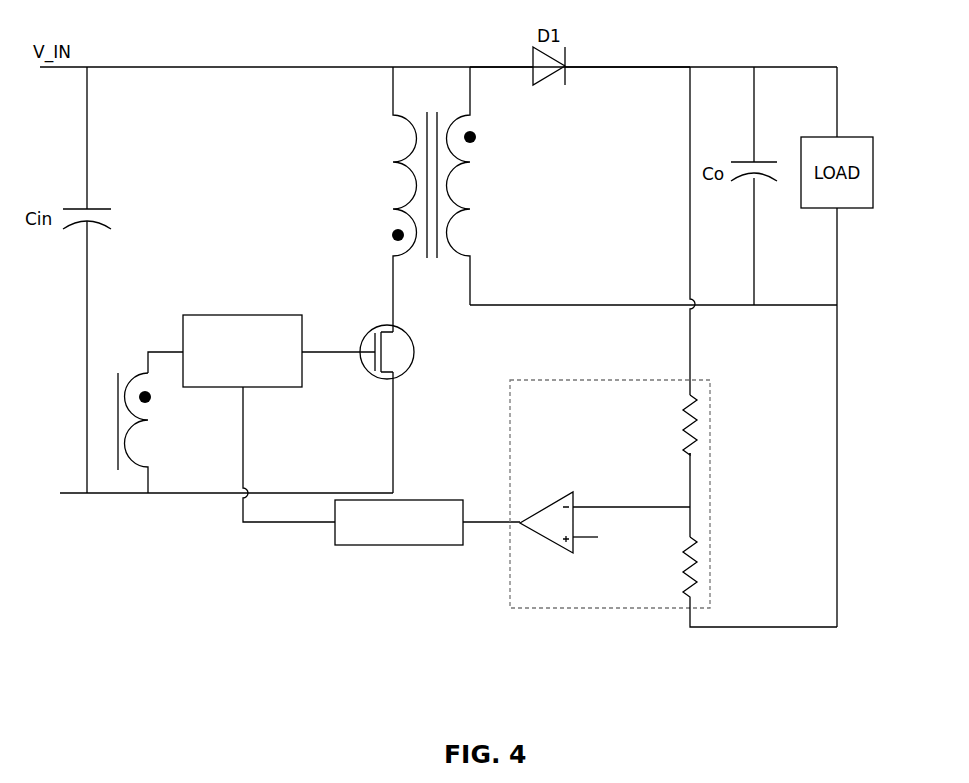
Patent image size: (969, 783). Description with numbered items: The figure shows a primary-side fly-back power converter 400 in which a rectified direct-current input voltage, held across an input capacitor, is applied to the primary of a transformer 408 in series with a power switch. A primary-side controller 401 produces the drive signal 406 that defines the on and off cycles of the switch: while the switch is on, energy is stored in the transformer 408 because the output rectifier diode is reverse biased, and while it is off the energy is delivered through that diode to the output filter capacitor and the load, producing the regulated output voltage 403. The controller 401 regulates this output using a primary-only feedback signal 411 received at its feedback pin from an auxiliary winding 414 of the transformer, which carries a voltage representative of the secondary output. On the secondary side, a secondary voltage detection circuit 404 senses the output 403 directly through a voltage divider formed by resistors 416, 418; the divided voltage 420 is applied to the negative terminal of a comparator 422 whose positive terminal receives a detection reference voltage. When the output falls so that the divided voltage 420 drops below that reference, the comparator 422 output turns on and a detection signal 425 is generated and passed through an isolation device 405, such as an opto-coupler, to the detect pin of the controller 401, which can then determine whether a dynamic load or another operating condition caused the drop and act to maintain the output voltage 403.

The primary-side fly-back power converter 400 is at (293, 668).
The primary-side controller 401 is at (259, 302).
The output voltage 403 is at (670, 60).
The secondary voltage detection circuit 404 is at (673, 503).
The isolation device 405 is at (431, 548).
The drive signal 406 is at (313, 350).
The transformer 408 is at (420, 100).
The primary-only feedback signal 411 is at (165, 345).
The auxiliary winding 414 is at (131, 357).
The resistor 416 is at (676, 430).
The resistor 418 is at (679, 585).
The divided voltage 420 is at (681, 505).
The comparator 422 is at (538, 506).
The detection signal 425 is at (296, 531).